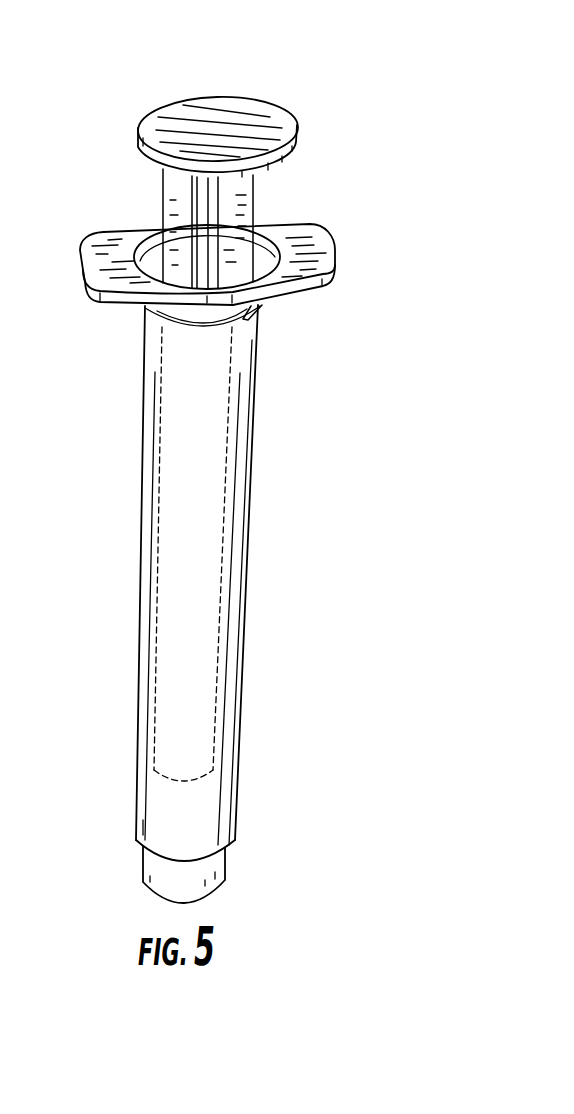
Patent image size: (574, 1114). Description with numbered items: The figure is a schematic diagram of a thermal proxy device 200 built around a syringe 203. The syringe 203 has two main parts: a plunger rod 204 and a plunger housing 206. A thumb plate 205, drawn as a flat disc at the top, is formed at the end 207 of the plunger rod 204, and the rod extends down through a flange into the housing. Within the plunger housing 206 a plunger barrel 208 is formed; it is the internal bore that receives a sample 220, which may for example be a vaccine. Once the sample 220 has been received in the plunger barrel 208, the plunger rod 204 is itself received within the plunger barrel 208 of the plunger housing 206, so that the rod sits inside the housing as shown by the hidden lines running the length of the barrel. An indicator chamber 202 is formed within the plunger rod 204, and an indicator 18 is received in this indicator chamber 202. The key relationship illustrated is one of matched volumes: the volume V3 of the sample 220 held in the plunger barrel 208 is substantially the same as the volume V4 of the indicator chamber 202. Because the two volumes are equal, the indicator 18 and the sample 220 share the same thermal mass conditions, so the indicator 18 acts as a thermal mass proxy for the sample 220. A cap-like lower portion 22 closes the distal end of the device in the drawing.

The thermal proxy device 200 is at (96, 35).
The thumb plate 205 is at (250, 107).
The plunger rod 204 is at (257, 210).
The end 207 is at (258, 316).
The syringe 203 is at (257, 410).
The plunger housing 206 is at (240, 622).
The indicator chamber 202 is at (213, 503).
The plunger barrel 208 is at (176, 758).
The indicator 18 is at (172, 712).
The sample 220 is at (155, 806).
The tip cap 22 is at (202, 830).
The volume of indicator chamber V4 is at (143, 473).
The volume of sample V3 is at (150, 827).